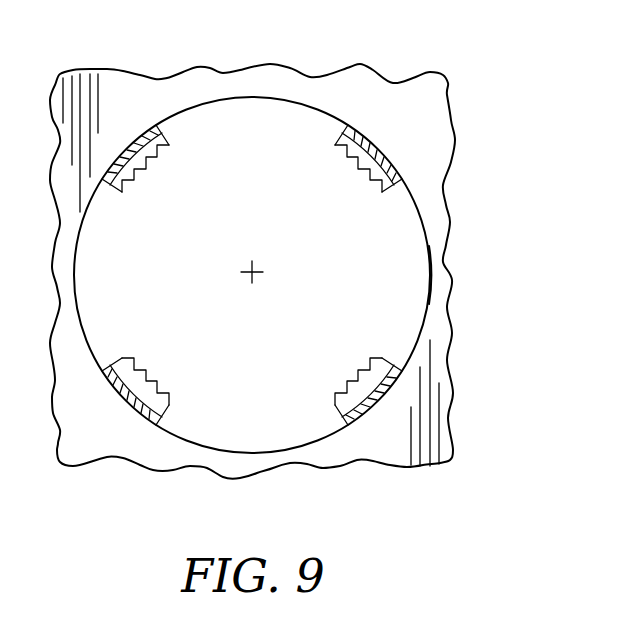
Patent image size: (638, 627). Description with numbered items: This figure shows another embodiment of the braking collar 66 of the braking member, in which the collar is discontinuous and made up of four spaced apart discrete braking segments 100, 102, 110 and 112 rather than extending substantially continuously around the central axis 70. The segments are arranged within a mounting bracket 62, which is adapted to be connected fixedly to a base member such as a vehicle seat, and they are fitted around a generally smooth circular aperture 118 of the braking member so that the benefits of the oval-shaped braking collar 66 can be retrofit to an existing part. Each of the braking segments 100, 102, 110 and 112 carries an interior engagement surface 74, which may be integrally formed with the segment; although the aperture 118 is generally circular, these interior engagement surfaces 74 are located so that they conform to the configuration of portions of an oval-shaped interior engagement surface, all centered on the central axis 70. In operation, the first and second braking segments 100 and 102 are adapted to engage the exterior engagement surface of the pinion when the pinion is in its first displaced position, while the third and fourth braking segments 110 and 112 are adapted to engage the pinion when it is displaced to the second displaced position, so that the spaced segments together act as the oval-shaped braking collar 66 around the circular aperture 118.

The mounting bracket 62 is at (455, 140).
The braking collar 66 is at (393, 192).
The central axis 70 is at (260, 267).
The interior engagement surface 74 is at (150, 168).
The first braking segment 100 is at (168, 144).
The second braking segment 102 is at (347, 127).
The third braking segment 110 is at (169, 407).
The fourth braking segment 112 is at (402, 371).
The circular aperture 118 is at (437, 306).